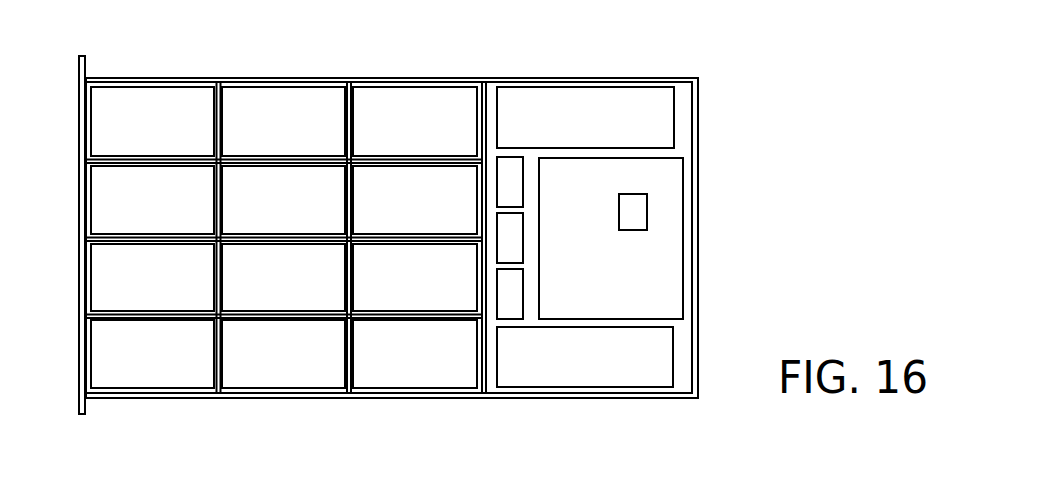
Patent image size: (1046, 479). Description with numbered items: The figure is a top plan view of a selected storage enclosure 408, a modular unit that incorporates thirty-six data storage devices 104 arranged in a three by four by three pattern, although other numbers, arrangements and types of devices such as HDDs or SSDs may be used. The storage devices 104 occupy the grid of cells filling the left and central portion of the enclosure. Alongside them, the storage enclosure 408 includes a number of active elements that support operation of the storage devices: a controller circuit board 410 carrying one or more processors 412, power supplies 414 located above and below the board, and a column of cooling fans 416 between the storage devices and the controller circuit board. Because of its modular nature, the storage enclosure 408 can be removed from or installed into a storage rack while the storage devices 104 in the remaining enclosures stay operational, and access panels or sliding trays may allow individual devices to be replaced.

The data storage device 104 is at (284, 100).
The storage enclosure 408 is at (843, 105).
The controller circuit board 410 is at (649, 269).
The processor 412 is at (648, 213).
The power supply 414 is at (605, 101).
The cooling fan 416 is at (508, 172).